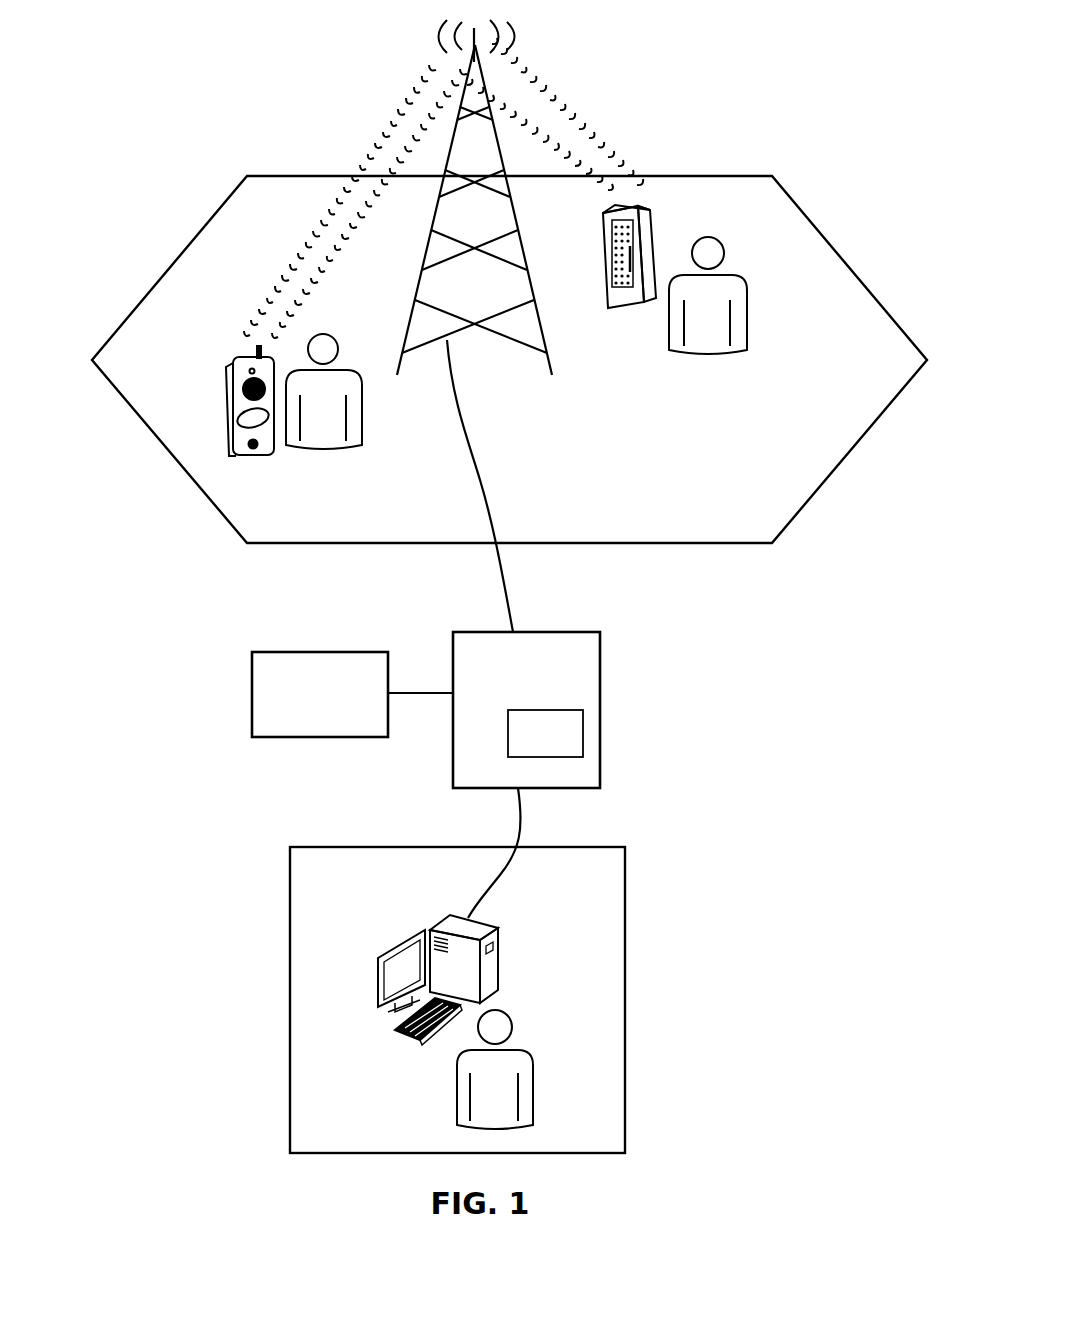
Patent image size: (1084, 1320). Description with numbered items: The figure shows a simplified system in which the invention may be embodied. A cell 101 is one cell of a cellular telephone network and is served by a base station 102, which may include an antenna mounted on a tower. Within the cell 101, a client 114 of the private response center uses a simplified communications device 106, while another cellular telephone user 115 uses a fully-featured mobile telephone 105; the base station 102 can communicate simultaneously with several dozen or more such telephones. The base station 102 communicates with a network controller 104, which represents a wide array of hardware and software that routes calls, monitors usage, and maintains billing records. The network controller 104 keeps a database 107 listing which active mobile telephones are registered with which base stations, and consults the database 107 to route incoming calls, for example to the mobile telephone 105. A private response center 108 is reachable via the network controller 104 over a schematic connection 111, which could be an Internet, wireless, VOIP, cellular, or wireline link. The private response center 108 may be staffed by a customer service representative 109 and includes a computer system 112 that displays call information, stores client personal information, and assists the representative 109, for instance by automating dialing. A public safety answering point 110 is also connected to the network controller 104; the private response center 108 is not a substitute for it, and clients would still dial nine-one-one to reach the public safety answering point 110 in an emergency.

The cell 101 is at (302, 195).
The base station 102 is at (472, 345).
The network controller 104 is at (453, 658).
The mobile telephone 105 is at (605, 287).
The simplified communicator 106 is at (240, 457).
The database 107 is at (577, 743).
The private response center 108 is at (290, 907).
The customer service representative 109 is at (533, 1075).
The public safety answering point 110 is at (308, 652).
The connection 111 is at (503, 583).
The computer system 112 is at (493, 963).
The client 114 is at (320, 437).
The cellular telephone user 115 is at (712, 343).